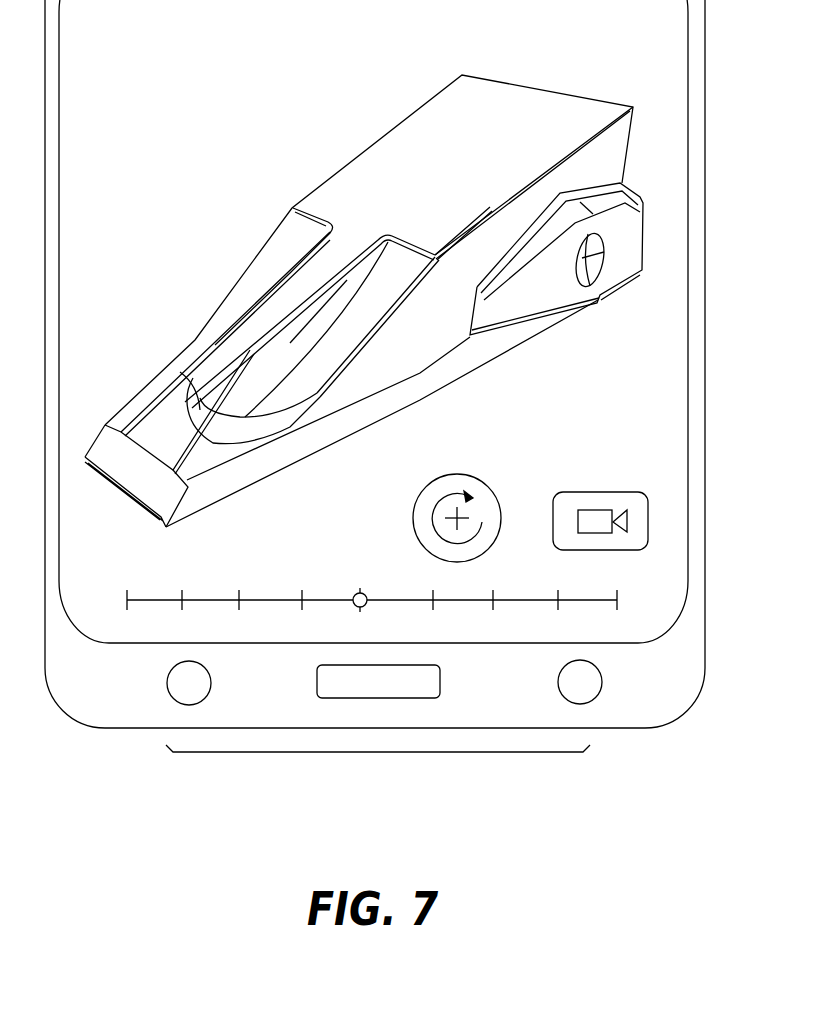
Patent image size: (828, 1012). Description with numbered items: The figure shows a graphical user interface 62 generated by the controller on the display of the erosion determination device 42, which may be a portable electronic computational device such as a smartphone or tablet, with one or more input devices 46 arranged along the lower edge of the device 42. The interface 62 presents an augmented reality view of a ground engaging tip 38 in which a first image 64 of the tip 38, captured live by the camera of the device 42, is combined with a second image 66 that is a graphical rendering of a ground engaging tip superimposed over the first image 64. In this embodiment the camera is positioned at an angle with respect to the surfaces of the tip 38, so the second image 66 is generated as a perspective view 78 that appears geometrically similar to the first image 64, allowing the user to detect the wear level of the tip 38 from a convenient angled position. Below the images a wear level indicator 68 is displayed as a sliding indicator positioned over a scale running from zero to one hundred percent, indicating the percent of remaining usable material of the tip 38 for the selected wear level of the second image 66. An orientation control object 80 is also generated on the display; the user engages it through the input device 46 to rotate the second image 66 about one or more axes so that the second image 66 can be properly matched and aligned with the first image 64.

The erosion determination device 42 is at (692, 702).
The input devices 46 is at (375, 753).
The graphical user interface 62 is at (620, 45).
The perspective view 78 is at (364, 301).
The first image 64 is at (128, 397).
The second image 66 is at (198, 400).
The tip 38 is at (167, 440).
The wear level indicator 68 is at (350, 574).
The orientation control object 80 is at (481, 476).